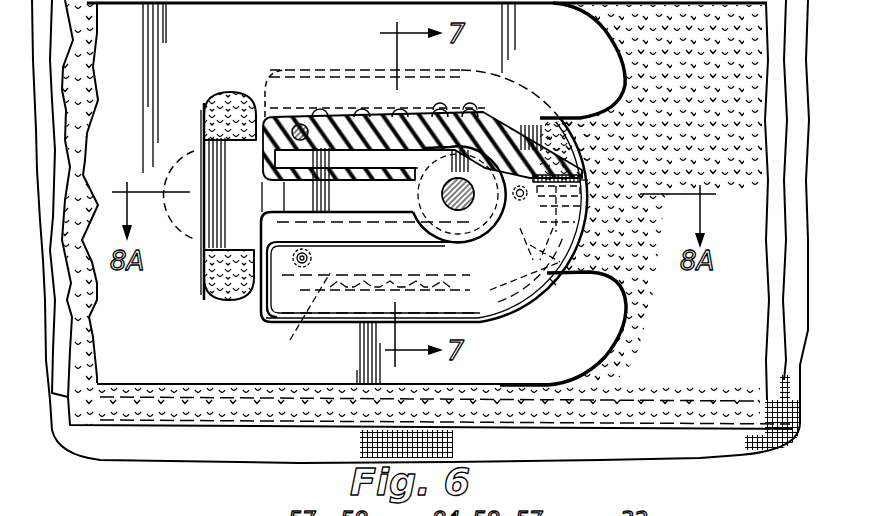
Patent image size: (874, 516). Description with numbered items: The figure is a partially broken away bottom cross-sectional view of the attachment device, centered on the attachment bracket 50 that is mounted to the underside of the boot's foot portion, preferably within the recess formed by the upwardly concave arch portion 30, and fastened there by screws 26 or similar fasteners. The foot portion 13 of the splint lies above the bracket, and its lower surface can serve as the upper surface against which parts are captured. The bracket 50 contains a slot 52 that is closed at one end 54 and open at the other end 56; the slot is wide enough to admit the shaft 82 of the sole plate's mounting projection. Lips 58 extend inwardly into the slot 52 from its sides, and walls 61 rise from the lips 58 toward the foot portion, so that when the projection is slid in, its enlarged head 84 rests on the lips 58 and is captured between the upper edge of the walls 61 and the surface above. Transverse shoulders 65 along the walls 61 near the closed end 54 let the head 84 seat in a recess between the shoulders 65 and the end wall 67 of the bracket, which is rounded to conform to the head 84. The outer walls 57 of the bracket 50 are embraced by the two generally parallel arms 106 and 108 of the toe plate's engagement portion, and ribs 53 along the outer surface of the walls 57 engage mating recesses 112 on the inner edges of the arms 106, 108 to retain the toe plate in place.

The foot portion 13 is at (222, 175).
The screws 26 is at (298, 126).
The arch portion 30 is at (197, 420).
The attachment bracket 50 is at (268, 322).
The slot 52 is at (262, 185).
The ribs 53 is at (390, 110).
The closed end 54 is at (505, 122).
The open end 56 is at (283, 197).
The outer walls 57 is at (345, 114).
The lips 58 is at (347, 232).
The walls 61 is at (358, 178).
The transverse shoulders 65 is at (440, 195).
The end wall 67 is at (493, 190).
The shaft 82 is at (459, 182).
The enlarged head 84 is at (473, 180).
The arm 106 is at (560, 368).
The arm 108 is at (565, 42).
The recesses 112 is at (440, 112).